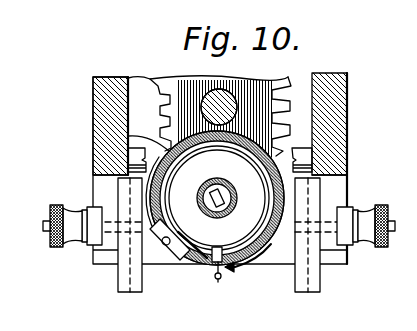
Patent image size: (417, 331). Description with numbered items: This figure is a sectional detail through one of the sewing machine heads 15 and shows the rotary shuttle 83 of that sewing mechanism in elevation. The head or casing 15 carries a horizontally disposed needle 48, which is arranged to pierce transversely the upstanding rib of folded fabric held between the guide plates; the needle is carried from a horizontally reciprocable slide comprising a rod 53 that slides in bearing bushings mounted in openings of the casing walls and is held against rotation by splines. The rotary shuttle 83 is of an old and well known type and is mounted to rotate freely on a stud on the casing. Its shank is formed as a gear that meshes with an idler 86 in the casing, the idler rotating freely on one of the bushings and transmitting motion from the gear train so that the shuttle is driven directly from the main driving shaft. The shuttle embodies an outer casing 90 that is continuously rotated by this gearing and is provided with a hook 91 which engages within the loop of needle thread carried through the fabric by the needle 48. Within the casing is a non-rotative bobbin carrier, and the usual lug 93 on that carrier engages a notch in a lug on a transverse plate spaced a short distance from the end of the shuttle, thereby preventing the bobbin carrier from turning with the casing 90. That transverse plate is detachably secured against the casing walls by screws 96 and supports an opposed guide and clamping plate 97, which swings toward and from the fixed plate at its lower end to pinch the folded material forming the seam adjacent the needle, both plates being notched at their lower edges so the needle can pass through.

The sewing machine head 15 is at (348, 105).
The needle 48 is at (221, 281).
The rod 53 is at (202, 108).
The rotary shuttle 83 is at (217, 198).
The idler 86 is at (263, 90).
The outer casing 90 is at (128, 134).
The hook 91 is at (224, 268).
The lug 93 is at (213, 263).
The screws 96 is at (360, 216).
The clamping plate 97 is at (314, 283).